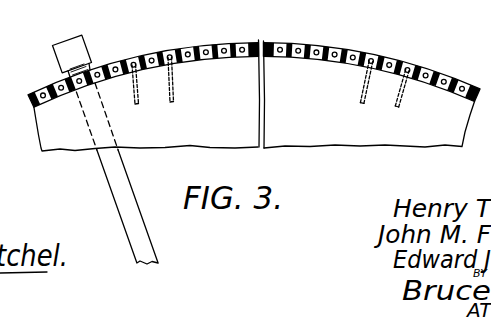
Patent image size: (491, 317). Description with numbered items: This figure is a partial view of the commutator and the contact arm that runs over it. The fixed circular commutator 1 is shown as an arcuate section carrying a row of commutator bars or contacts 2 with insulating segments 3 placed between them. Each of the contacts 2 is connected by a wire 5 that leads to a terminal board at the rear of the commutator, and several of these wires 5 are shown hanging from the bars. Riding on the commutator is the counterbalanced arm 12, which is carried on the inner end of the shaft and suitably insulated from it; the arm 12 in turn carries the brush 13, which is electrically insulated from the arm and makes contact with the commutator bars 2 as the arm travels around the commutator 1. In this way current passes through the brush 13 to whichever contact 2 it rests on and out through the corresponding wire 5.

The commutator 1 is at (330, 132).
The contacts 2 is at (318, 46).
The insulating segments 3 is at (364, 53).
The wire 5 is at (174, 87).
The counterbalanced arm 12 is at (112, 192).
The brush 13 is at (53, 55).